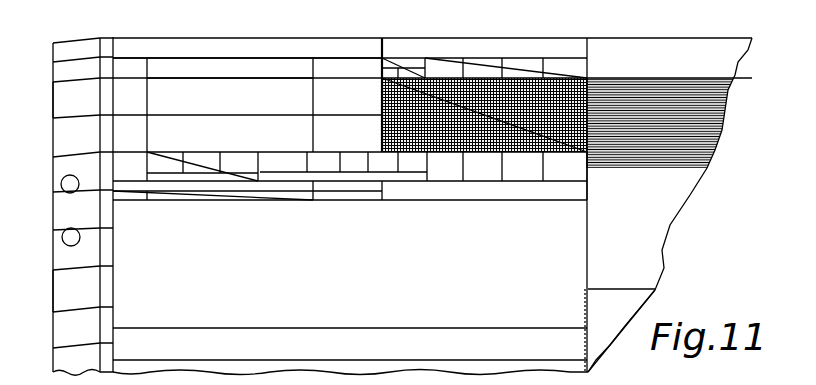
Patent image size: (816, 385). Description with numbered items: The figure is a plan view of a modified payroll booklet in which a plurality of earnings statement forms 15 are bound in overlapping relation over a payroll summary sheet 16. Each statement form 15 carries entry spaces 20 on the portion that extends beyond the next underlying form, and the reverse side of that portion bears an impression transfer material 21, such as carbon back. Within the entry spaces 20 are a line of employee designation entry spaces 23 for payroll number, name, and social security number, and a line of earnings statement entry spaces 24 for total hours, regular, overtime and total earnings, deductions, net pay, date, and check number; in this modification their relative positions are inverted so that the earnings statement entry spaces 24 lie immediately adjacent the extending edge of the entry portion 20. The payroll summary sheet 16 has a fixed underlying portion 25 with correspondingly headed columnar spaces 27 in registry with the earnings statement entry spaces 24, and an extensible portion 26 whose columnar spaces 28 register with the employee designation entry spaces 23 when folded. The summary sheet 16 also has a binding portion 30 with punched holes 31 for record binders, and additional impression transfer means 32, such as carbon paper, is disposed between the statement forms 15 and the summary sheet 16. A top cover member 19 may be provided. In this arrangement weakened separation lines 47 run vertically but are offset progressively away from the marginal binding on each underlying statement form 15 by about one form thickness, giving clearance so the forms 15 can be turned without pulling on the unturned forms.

The earnings statement form 15 is at (405, 206).
The payroll summary sheet 16 is at (68, 101).
The top cover member 19 is at (598, 340).
The entry spaces 20 is at (572, 187).
The impression transfer material 21 is at (722, 136).
The employee designation entry spaces 23 is at (185, 196).
The earnings statement entry spaces 24 is at (236, 165).
The fixed underlying portion 25 is at (495, 50).
The extensible portion 26 is at (280, 48).
The columnar spaces 27 is at (430, 62).
The columnar spaces 28 is at (190, 98).
The binding portion 30 is at (67, 299).
The punched holes 31 is at (66, 230).
The impression transfer means 32 is at (381, 97).
The weakened separation lines 47 is at (585, 310).